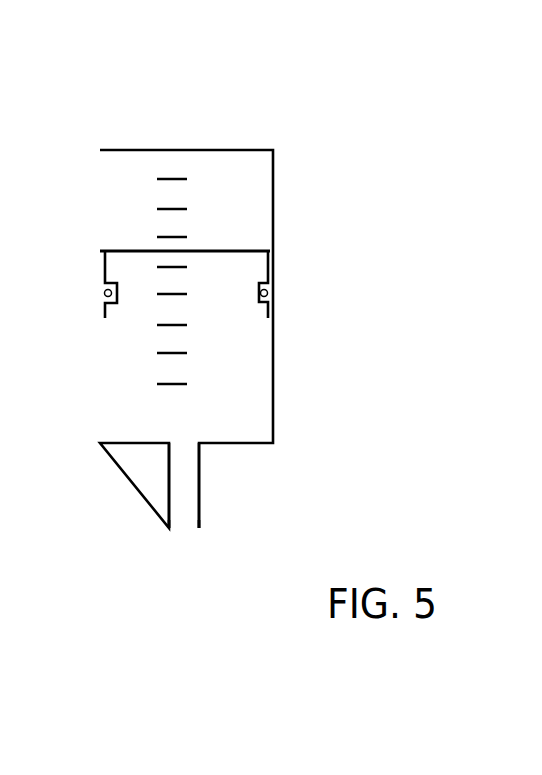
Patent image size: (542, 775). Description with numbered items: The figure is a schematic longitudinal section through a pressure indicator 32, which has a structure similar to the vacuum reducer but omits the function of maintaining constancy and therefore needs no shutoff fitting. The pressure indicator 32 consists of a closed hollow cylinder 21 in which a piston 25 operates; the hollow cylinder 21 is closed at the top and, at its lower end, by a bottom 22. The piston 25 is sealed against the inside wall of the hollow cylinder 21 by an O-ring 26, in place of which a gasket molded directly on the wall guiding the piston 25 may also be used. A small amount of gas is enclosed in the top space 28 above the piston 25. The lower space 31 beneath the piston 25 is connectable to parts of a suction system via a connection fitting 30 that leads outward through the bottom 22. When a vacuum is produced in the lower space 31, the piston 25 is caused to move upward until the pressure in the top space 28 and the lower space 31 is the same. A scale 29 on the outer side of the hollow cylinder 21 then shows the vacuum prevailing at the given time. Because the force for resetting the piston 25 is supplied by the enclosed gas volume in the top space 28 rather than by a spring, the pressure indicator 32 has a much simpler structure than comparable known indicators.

The hollow cylinder 21 is at (97, 332).
The bottom 22 is at (232, 448).
The piston 25 is at (237, 248).
The O-ring 26 is at (272, 288).
The top space 28 is at (250, 198).
The scale 29 is at (152, 207).
The connection fitting 30 is at (187, 513).
The lower space 31 is at (248, 390).
The pressure indicator 32 is at (345, 72).